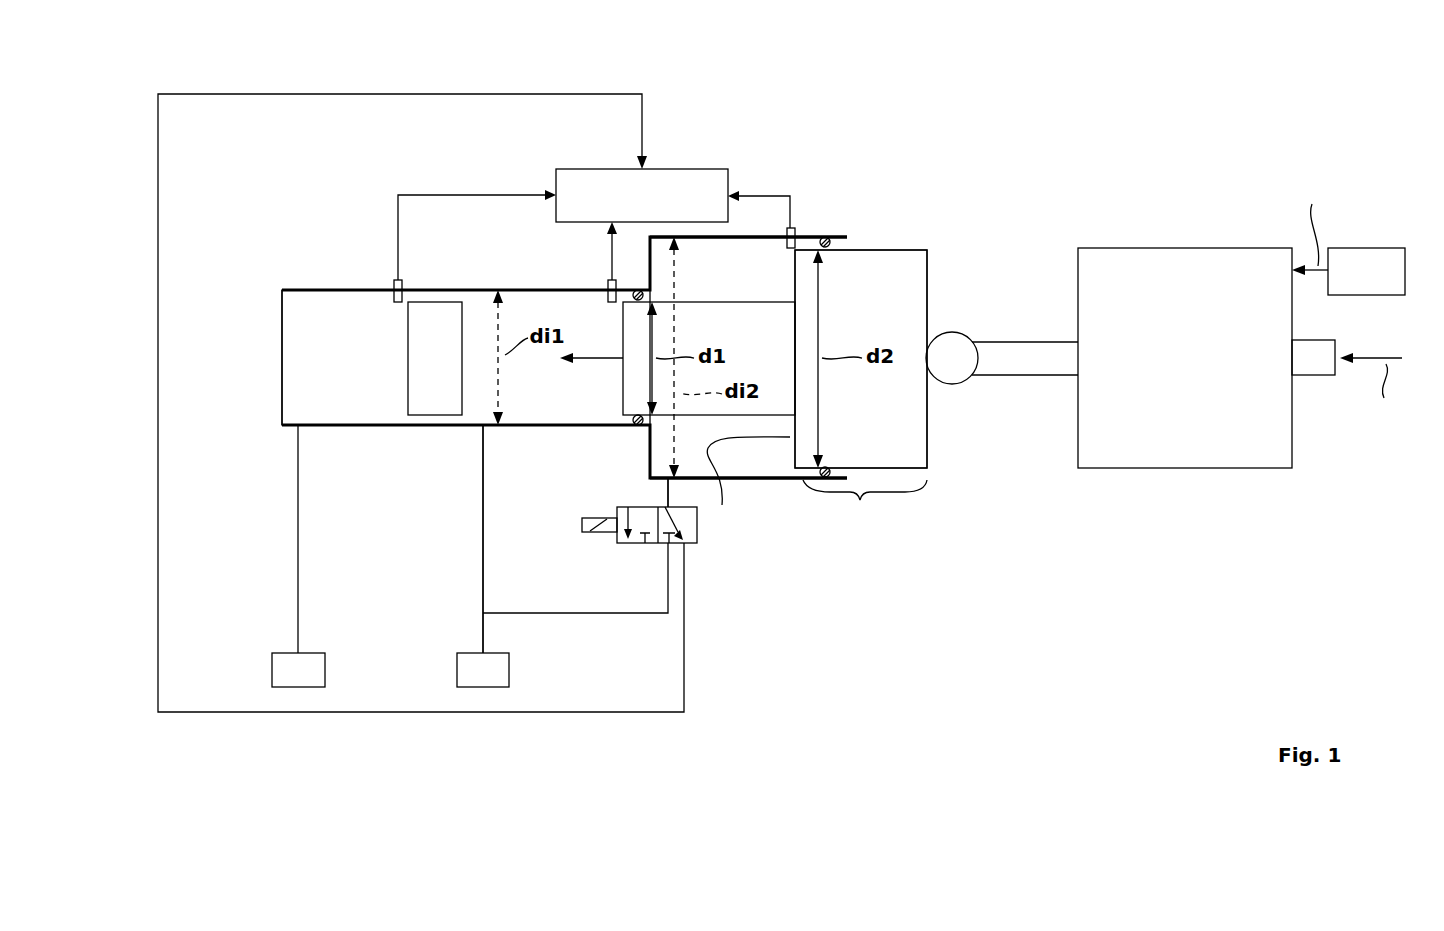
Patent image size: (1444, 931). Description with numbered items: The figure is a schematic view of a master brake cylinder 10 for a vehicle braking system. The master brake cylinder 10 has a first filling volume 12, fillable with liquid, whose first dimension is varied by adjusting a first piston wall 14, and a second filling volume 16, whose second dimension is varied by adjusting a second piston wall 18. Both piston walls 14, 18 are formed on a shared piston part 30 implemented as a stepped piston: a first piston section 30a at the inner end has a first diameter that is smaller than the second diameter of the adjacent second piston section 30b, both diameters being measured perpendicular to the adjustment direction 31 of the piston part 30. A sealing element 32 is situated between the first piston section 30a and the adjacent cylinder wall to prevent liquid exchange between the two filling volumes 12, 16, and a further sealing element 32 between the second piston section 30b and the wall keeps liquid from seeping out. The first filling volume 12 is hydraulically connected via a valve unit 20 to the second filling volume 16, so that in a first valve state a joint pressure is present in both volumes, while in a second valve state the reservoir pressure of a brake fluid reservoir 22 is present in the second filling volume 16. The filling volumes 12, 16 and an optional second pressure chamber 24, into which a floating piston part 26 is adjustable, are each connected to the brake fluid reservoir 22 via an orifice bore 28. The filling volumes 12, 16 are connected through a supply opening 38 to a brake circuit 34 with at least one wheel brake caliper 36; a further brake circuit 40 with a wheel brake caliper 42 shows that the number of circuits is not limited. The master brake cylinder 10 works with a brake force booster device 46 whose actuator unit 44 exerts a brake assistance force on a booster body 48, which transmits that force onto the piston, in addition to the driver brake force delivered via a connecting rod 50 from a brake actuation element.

The master brake cylinder 10 is at (258, 407).
The first filling volume 12 is at (536, 427).
The first piston wall 14 is at (621, 383).
The second filling volume 16 is at (684, 283).
The second piston wall 18 is at (782, 274).
The valve unit 20 is at (617, 527).
The brake fluid reservoir 22 is at (680, 168).
The second pressure chamber 24 is at (356, 428).
The floating piston part 26 is at (437, 417).
The orifice bore 28 is at (400, 283).
The shared piston part 30 is at (928, 418).
The first piston section 30a is at (745, 485).
The second piston section 30b is at (860, 500).
The adjustment direction 31 is at (600, 350).
The sealing element 32 is at (638, 290).
The brake circuit 34 is at (506, 628).
The wheel brake caliper 36 is at (485, 688).
The supply opening 38 is at (484, 427).
The brake circuit 40 is at (322, 572).
The wheel brake caliper 42 is at (300, 688).
The actuator unit 44 is at (1366, 247).
The brake force booster device 46 is at (1204, 170).
The booster body 48 is at (1187, 470).
The connecting rod 50 is at (1025, 340).